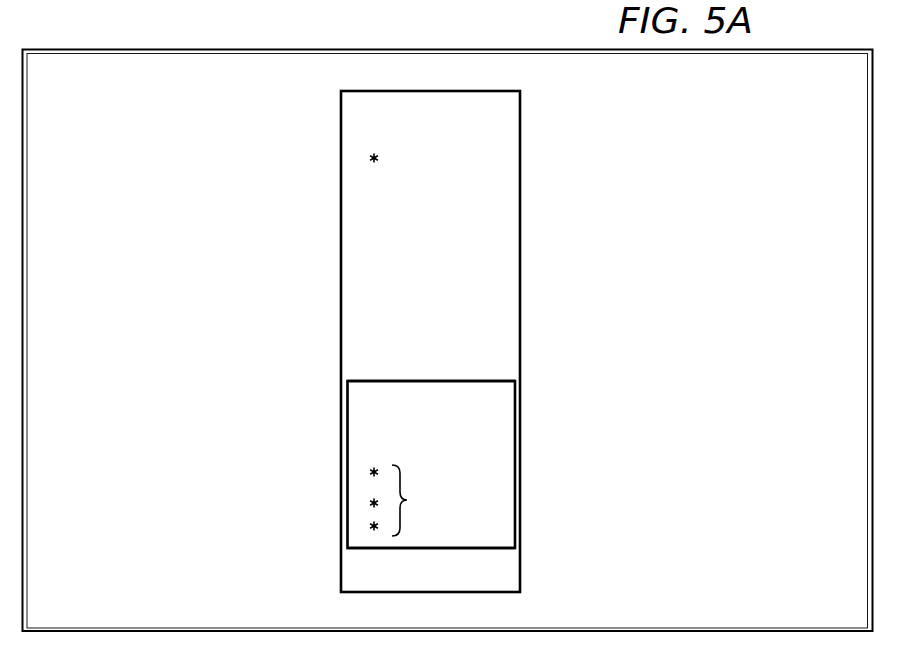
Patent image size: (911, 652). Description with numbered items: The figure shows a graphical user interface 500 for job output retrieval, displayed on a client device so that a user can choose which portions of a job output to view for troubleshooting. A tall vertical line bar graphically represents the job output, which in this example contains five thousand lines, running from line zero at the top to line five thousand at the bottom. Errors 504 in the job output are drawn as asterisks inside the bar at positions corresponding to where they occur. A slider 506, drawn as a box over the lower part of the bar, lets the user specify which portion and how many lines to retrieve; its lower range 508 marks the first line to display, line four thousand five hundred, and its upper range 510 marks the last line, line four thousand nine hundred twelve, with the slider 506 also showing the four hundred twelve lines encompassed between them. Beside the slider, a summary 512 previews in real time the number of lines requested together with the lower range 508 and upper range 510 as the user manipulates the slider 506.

The graphical user interface 500 is at (259, 228).
The errors 504 is at (379, 157).
The slider 506 is at (503, 498).
The lower range 508 is at (442, 380).
The upper range 510 is at (417, 549).
The summary 512 is at (498, 379).